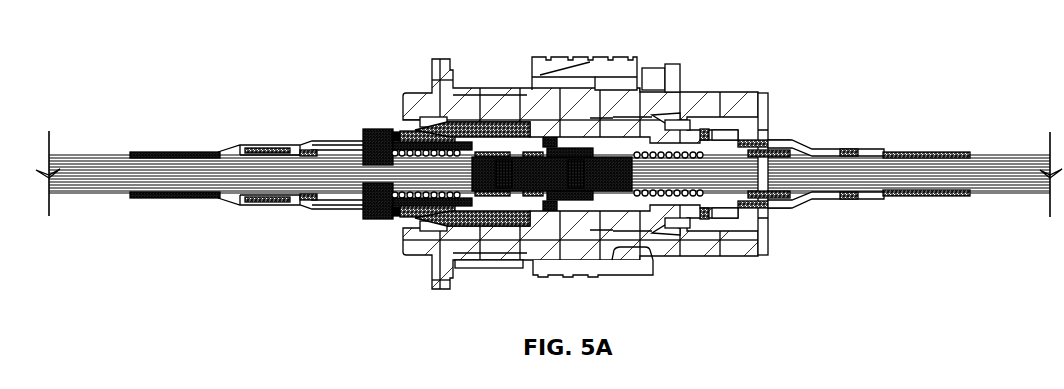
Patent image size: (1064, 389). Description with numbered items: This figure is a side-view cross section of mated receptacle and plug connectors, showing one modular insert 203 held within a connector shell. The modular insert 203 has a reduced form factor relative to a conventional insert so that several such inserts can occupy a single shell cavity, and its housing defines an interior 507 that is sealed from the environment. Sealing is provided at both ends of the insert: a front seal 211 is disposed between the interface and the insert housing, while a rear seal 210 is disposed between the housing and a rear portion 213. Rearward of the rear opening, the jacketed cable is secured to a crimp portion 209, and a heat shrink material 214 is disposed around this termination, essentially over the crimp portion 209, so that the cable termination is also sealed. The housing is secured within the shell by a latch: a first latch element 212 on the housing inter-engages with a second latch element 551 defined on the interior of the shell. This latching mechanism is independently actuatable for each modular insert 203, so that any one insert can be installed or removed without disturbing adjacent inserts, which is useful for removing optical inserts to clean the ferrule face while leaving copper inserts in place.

The modular insert 203 is at (628, 217).
The interior 507 is at (563, 140).
The second latch element 551 is at (670, 112).
The front seal 211 is at (537, 117).
The first latch element 212 is at (677, 113).
The rear portion 213 is at (724, 132).
The rear seal 210 is at (705, 130).
The heat shrink material 214 is at (815, 148).
The crimp portion 209 is at (851, 150).